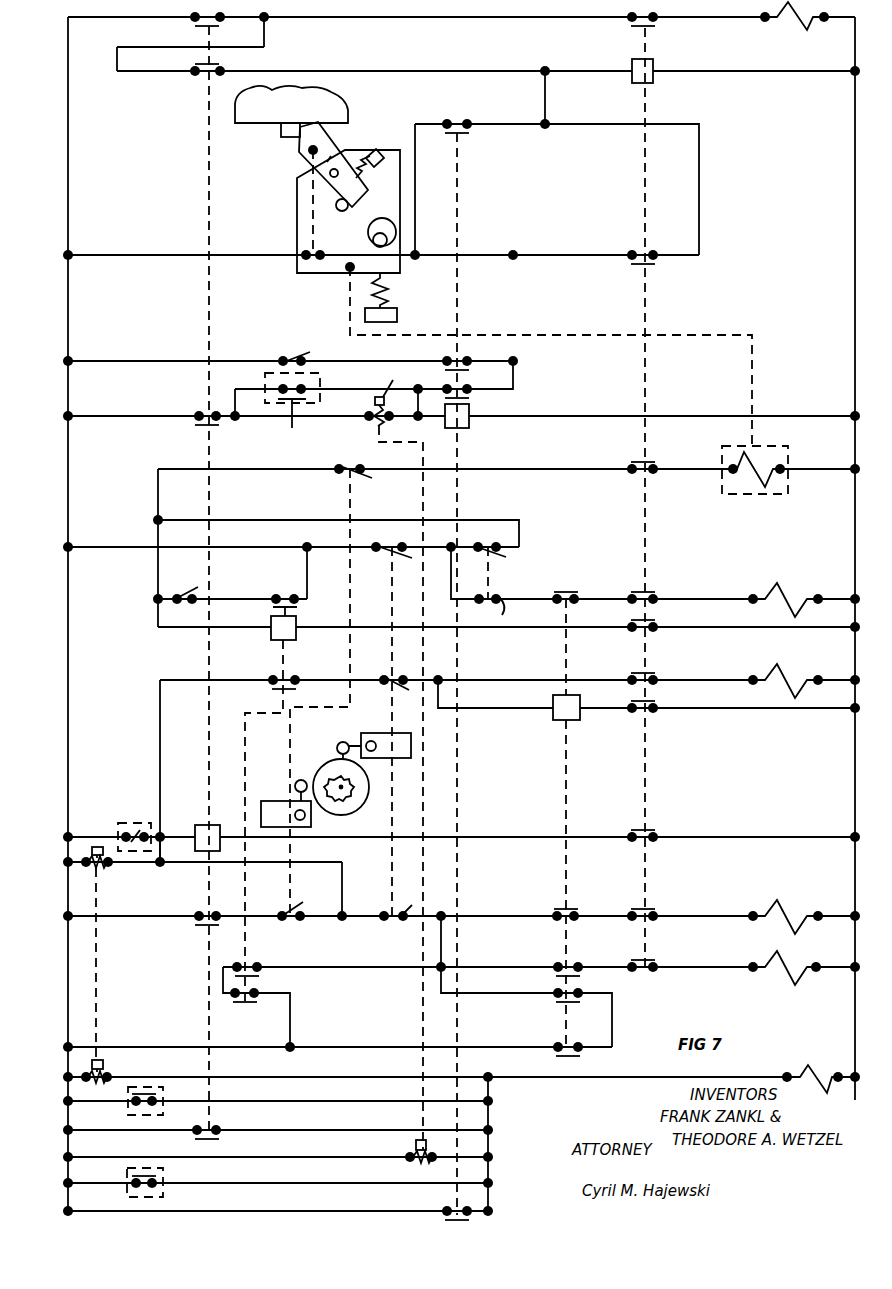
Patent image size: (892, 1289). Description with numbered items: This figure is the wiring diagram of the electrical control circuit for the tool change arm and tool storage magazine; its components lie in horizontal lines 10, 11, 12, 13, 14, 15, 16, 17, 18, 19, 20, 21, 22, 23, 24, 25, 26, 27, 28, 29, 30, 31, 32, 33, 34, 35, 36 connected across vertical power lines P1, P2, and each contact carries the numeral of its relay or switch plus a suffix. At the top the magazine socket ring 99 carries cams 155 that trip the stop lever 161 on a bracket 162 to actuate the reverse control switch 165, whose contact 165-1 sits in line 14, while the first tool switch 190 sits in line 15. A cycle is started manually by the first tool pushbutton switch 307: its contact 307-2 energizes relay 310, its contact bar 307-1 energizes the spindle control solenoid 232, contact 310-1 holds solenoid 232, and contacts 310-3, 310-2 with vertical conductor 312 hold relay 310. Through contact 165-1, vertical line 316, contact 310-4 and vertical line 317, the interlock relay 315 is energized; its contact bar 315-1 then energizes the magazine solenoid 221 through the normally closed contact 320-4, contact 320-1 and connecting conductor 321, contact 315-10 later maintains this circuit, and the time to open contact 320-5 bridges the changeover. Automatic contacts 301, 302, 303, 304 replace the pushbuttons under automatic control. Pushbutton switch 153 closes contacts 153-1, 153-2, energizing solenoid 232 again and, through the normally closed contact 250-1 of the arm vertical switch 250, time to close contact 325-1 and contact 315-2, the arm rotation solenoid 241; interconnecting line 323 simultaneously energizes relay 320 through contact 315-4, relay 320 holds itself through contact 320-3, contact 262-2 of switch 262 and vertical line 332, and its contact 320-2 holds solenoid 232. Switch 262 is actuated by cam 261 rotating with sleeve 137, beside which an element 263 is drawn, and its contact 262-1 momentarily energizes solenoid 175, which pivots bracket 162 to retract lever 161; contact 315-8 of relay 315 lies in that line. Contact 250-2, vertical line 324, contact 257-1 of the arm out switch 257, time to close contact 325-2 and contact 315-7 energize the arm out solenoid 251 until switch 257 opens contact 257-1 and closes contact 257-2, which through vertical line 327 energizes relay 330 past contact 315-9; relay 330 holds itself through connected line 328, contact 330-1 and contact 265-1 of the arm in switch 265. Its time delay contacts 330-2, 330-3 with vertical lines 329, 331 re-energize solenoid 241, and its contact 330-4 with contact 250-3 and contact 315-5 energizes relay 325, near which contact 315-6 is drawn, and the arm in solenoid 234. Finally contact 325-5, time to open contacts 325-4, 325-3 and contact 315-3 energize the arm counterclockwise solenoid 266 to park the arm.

The power line P1 is at (68, 188).
The power line P2 is at (855, 216).
The line 10 is at (445, 18).
The line 11 is at (151, 48).
The line 12 is at (448, 72).
The line 13 is at (367, 185).
The line 14 is at (367, 256).
The line 15 is at (277, 362).
The line 16 is at (274, 388).
The line 17 is at (448, 417).
The line 18 is at (448, 544).
The line 19 is at (277, 529).
The line 20 is at (277, 548).
The line 21 is at (448, 578).
The line 22 is at (448, 628).
The line 23 is at (448, 767).
The line 24 is at (448, 699).
The line 25 is at (448, 838).
The line 26 is at (189, 863).
The line 27 is at (448, 917).
The line 28 is at (448, 1003).
The line 29 is at (324, 981).
The line 30 is at (324, 1048).
The line 31 is at (448, 1140).
The line 32 is at (264, 1102).
The line 33 is at (264, 1131).
The line 34 is at (264, 1158).
The line 35 is at (264, 1184).
The line 36 is at (264, 1212).
The control knob 99 is at (338, 118).
The knob stem 155 is at (280, 136).
The switch lever 161 is at (325, 157).
The switch housing 162 is at (297, 193).
The switch 165 is at (286, 249).
The switch contacts 165-1 is at (328, 262).
The door switch contacts 190 is at (288, 353).
The relay contacts 320-5 is at (197, 28).
The conductor 321 is at (265, 36).
The relay contacts 320-4 is at (203, 78).
The relay 320 is at (195, 820).
The relay contacts 315-1 is at (652, 26).
The heater 221 is at (798, 22).
The relay 315 is at (666, 92).
The conductor 317 is at (545, 98).
The relay contacts 310-4 is at (466, 133).
The conductor 316 is at (415, 190).
The relay contacts 315-10 is at (653, 264).
The relay contacts 310-3 is at (460, 368).
The relay contacts 310-2 is at (460, 396).
The relay 310 is at (472, 431).
The relay contacts 320-1 is at (199, 410).
The timer contacts 301 is at (292, 415).
The thermostatic switch 307 is at (388, 385).
The heater 307-2 is at (375, 401).
The conductor 312 is at (417, 404).
The switch contacts 262-1 is at (362, 480).
The relay contacts 315-8 is at (651, 460).
The heater 175 is at (775, 458).
The conductor 327 is at (158, 568).
The conductor 328 is at (307, 572).
The switch contacts 250-2 is at (404, 560).
The switch contacts 257-2 is at (498, 560).
The switch 257 is at (493, 589).
The switch contacts 257-1 is at (511, 608).
The switch 265 is at (178, 587).
The switch contacts 265-1 is at (200, 590).
The conductor 324 is at (451, 583).
The relay contacts 325-2 is at (574, 592).
The relay contacts 315-7 is at (653, 591).
The heater 251 is at (786, 593).
The relay contacts 330-1 is at (294, 606).
The relay 330 is at (270, 645).
The relay contacts 315-9 is at (653, 619).
The relay contacts 330-4 is at (278, 689).
The switch contacts 250-3 is at (405, 690).
The relay contacts 315-5 is at (653, 672).
The heater 234 is at (788, 676).
The relay contacts 315-6 is at (653, 700).
The relay 325 is at (582, 723).
The timer motor 137 is at (344, 818).
The cam follower 263 is at (327, 764).
The cam switch 250 is at (411, 745).
The cam switch 262 is at (274, 800).
The cam 261 is at (369, 787).
The heater 153-2 is at (87, 847).
The timer contacts 302 is at (139, 833).
The relay contacts 315-4 is at (653, 829).
The thermostatic switch 153 is at (97, 871).
The conductor 323 is at (160, 848).
The conductor 332 is at (342, 882).
The relay contacts 320-3 is at (207, 927).
The switch contacts 262-2 is at (298, 914).
The switch contacts 250-1 is at (408, 930).
The conductor 331 is at (441, 948).
The relay contacts 325-1 is at (574, 909).
The relay contacts 315-2 is at (653, 908).
The heater 241 is at (788, 905).
The relay contacts 330-3 is at (255, 965).
The relay contacts 325-3 is at (578, 978).
The relay contacts 315-3 is at (653, 959).
The heater 266 is at (788, 960).
The relay contacts 330-2 is at (250, 1005).
The conductor 329 is at (290, 1012).
The relay contacts 325-4 is at (565, 1005).
The relay contacts 325-5 is at (568, 1056).
The thermostatic switch 153-1 is at (103, 1063).
The heater 232 is at (808, 1074).
The timer contacts 303 is at (142, 1092).
The relay contacts 320-2 is at (214, 1139).
The thermostatic switch 307-1 is at (416, 1146).
The timer contacts 304 is at (152, 1176).
The relay contacts 310-1 is at (447, 1220).